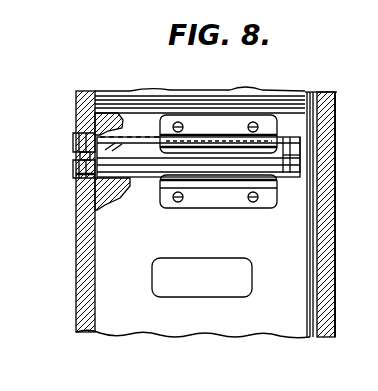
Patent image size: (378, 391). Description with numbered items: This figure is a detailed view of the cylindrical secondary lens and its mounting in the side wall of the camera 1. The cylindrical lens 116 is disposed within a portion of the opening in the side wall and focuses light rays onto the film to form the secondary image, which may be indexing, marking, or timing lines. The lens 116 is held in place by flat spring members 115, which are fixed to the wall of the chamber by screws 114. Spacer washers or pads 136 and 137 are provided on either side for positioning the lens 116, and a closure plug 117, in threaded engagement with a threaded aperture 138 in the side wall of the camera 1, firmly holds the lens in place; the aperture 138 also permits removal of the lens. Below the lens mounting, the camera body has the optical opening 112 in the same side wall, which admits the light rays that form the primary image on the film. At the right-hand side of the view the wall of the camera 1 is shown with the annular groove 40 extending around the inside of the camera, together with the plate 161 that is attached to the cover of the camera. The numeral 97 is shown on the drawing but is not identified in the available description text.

The camera 1 is at (74, 101).
The support member 97 is at (125, 97).
The spacer washer or pad 136 is at (97, 120).
The cylindrical lens 116 is at (87, 143).
The closure plug 117 is at (85, 172).
The threaded aperture 138 is at (83, 185).
The flat spring members 115 is at (152, 165).
The screws 114 is at (250, 121).
The spacer washer or pad 137 is at (295, 160).
The optical opening 112 is at (246, 266).
The plate 161 is at (337, 265).
The annular groove 40 is at (310, 337).